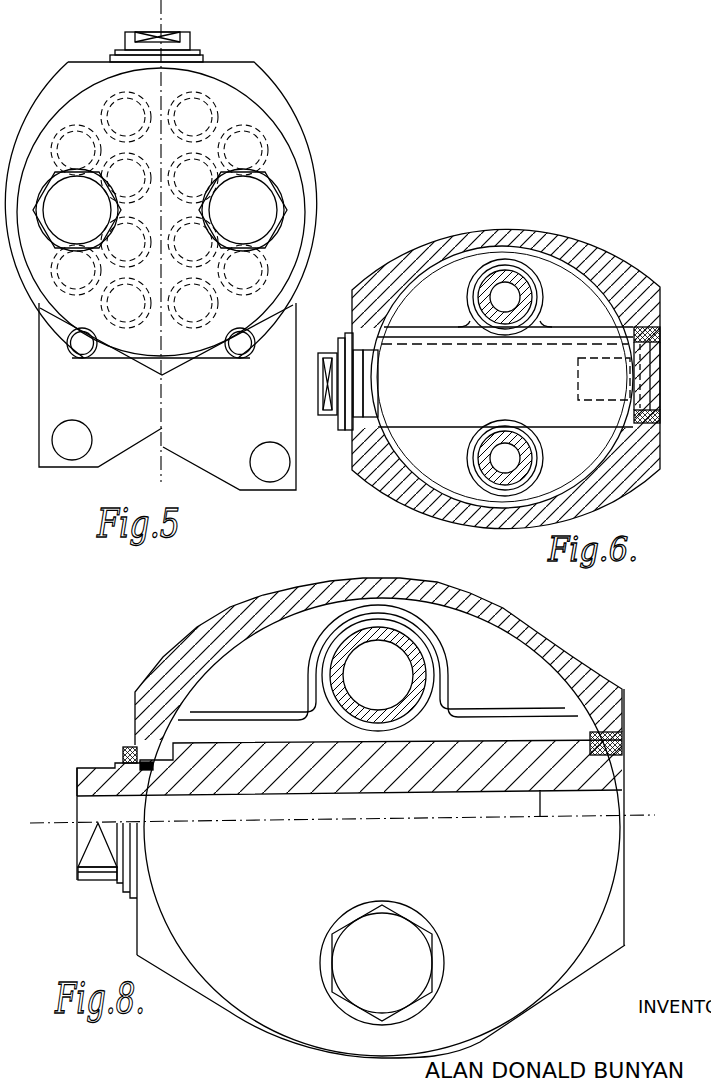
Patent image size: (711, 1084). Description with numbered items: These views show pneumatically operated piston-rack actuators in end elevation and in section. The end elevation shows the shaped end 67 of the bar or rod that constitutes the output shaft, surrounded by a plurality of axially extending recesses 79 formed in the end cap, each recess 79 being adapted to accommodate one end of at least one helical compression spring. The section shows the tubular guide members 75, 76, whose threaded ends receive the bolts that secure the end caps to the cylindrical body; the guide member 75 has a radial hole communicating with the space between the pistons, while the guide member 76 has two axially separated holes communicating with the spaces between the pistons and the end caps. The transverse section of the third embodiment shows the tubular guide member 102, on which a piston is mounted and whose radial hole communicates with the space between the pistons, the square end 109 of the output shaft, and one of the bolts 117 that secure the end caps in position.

In FIG. 5, the end of output shaft 67 is at (180, 39).
In FIG. 6, the end of output shaft 67 is at (322, 416).
In FIG. 5, the axially extending recesses 79 is at (222, 98).
In FIG. 6, the tubular guide member 75 is at (520, 300).
In FIG. 6, the tubular guide member 76 is at (492, 456).
In FIG. 8, the tubular guide member 102 is at (340, 658).
In FIG. 8, the square end 109 is at (85, 843).
In FIG. 8, the bolt 117 is at (382, 963).